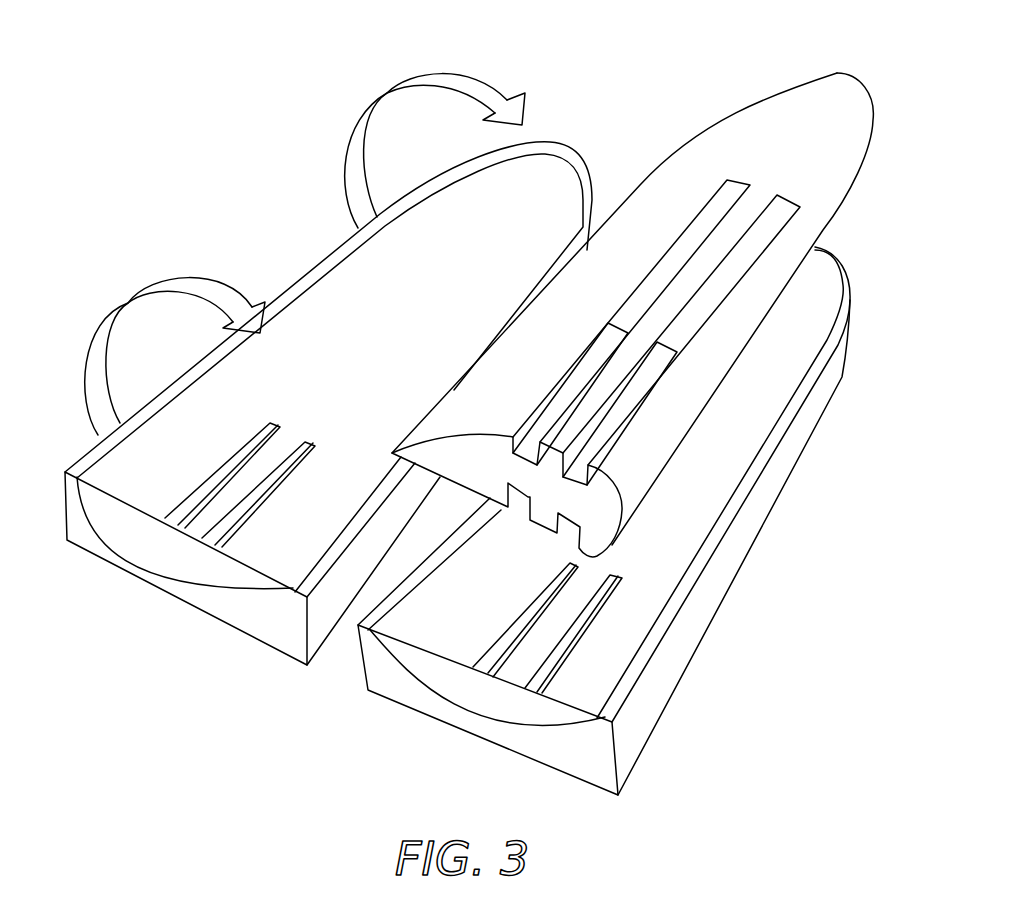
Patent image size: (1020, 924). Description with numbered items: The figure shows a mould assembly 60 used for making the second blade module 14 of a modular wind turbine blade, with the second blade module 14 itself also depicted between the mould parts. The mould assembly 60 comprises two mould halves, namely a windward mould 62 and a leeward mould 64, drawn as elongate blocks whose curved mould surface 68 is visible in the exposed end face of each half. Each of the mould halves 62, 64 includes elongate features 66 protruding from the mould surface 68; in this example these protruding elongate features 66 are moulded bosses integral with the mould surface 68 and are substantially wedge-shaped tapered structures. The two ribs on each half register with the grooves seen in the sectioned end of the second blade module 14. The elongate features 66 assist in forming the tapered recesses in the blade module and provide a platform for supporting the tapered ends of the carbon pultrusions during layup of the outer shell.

The mould assembly 60 is at (577, 83).
The second blade module 14 is at (752, 112).
The windward mould 62 is at (570, 775).
The leeward mould 64 is at (258, 640).
The elongate features 66 is at (268, 478).
The mould surface 68 is at (135, 487).